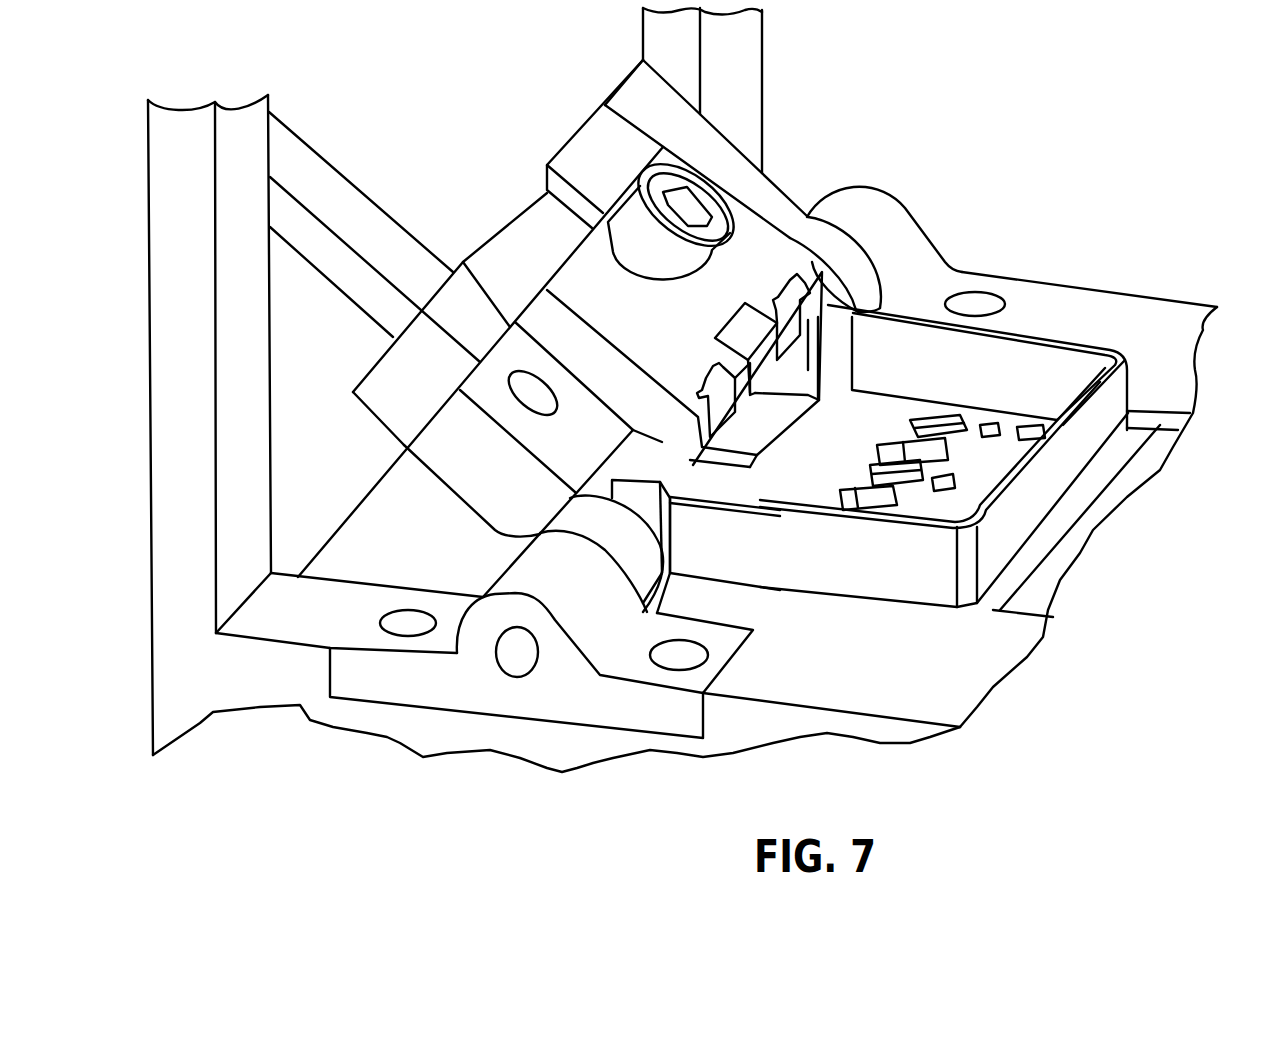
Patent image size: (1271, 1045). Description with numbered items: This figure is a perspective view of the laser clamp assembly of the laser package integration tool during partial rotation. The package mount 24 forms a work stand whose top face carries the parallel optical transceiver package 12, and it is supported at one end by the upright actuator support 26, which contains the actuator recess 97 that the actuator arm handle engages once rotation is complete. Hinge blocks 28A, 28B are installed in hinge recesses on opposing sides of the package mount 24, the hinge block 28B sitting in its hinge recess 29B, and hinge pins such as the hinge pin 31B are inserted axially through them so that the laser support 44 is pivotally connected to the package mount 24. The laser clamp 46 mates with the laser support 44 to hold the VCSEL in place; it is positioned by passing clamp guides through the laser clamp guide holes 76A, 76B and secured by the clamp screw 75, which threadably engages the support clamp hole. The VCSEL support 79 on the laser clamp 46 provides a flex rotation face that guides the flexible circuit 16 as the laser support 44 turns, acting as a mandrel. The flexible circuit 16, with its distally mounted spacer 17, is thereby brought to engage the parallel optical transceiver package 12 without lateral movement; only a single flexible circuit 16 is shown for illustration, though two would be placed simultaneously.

The parallel optical transceiver package 12 is at (1077, 367).
The flexible circuit 16 is at (723, 463).
The spacer 17 is at (742, 475).
The package mount 24 is at (833, 678).
The actuator support 26 is at (230, 270).
The hinge block 28A is at (912, 256).
The hinge block 28B is at (587, 707).
The hinge recess 29B is at (703, 740).
The hinge pin 31B is at (502, 667).
The laser support 44 is at (393, 537).
The laser clamp 46 is at (707, 133).
The clamp screw 75 is at (676, 186).
The laser clamp guide hole 76A is at (732, 166).
The laser clamp guide hole 76B is at (522, 372).
The VCSEL support 79 is at (862, 262).
The actuator recess 97 is at (352, 198).